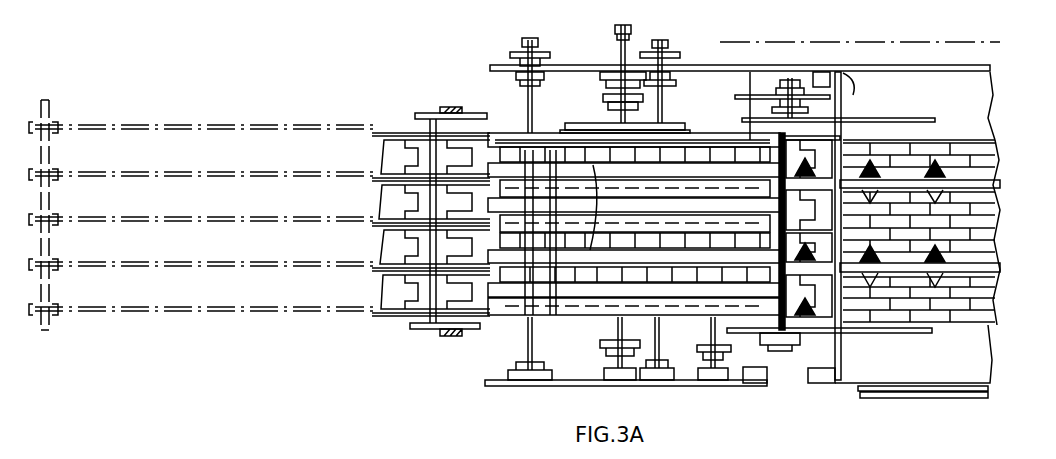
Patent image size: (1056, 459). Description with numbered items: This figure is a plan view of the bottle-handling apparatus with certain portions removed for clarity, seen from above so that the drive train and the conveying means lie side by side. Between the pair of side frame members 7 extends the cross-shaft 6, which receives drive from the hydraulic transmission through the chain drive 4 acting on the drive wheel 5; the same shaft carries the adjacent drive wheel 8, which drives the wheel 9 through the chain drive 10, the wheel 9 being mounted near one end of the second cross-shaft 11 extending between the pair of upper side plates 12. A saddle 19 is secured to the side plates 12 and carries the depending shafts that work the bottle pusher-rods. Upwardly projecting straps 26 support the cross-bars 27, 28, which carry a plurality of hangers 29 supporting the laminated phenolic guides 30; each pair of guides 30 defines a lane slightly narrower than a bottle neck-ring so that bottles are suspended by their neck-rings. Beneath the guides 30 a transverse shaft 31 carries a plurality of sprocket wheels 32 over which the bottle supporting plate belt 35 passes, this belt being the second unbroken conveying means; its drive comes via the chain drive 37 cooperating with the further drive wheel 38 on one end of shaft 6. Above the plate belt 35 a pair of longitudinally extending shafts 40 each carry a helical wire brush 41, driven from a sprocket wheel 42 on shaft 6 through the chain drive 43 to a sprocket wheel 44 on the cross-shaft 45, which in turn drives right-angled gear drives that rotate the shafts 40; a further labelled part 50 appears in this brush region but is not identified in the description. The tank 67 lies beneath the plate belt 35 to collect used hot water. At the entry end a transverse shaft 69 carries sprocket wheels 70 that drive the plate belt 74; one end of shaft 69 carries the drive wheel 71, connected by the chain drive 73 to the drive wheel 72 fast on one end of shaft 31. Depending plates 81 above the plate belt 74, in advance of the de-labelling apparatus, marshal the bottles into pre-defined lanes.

The chain drive 4 is at (680, 133).
The drive wheel 5 is at (579, 126).
The cross-shaft 6 is at (620, 122).
The side frame members 7 is at (570, 70).
The drive wheel 8 is at (626, 110).
The wheel 9 is at (834, 103).
The chain drive 10 is at (845, 106).
The second cross-shaft 11 is at (772, 131).
The upper side plates 12 is at (410, 330).
The saddle 19 is at (452, 338).
The straps 26 is at (846, 368).
The cross-bar 27 is at (420, 119).
The cross-bar 28 is at (845, 133).
The hangers 29 is at (450, 178).
The laminated phenolic guides 30 is at (514, 146).
The transverse shaft 31 is at (660, 364).
The sprocket wheels 32 is at (687, 303).
The bottle supporting plate belt 35 is at (990, 150).
The chain drive 37 is at (762, 43).
The drive wheel 38 is at (621, 60).
The longitudinally extending shafts 40 is at (996, 271).
The helical wire brush 41 is at (925, 163).
The sprocket wheel 42 is at (603, 351).
The chain drive 43 is at (700, 354).
The sprocket wheel 44 is at (722, 352).
The cross-shaft 45 is at (720, 366).
The bar 50 is at (973, 150).
The tank 67 is at (921, 367).
The transverse shaft 69 is at (525, 357).
The sprocket wheels 70 is at (556, 306).
The drive wheel 71 is at (547, 60).
The drive wheel 72 is at (668, 56).
The chain drive 73 is at (572, 56).
The plate belt 74 is at (400, 302).
The depending plates 81 is at (274, 174).